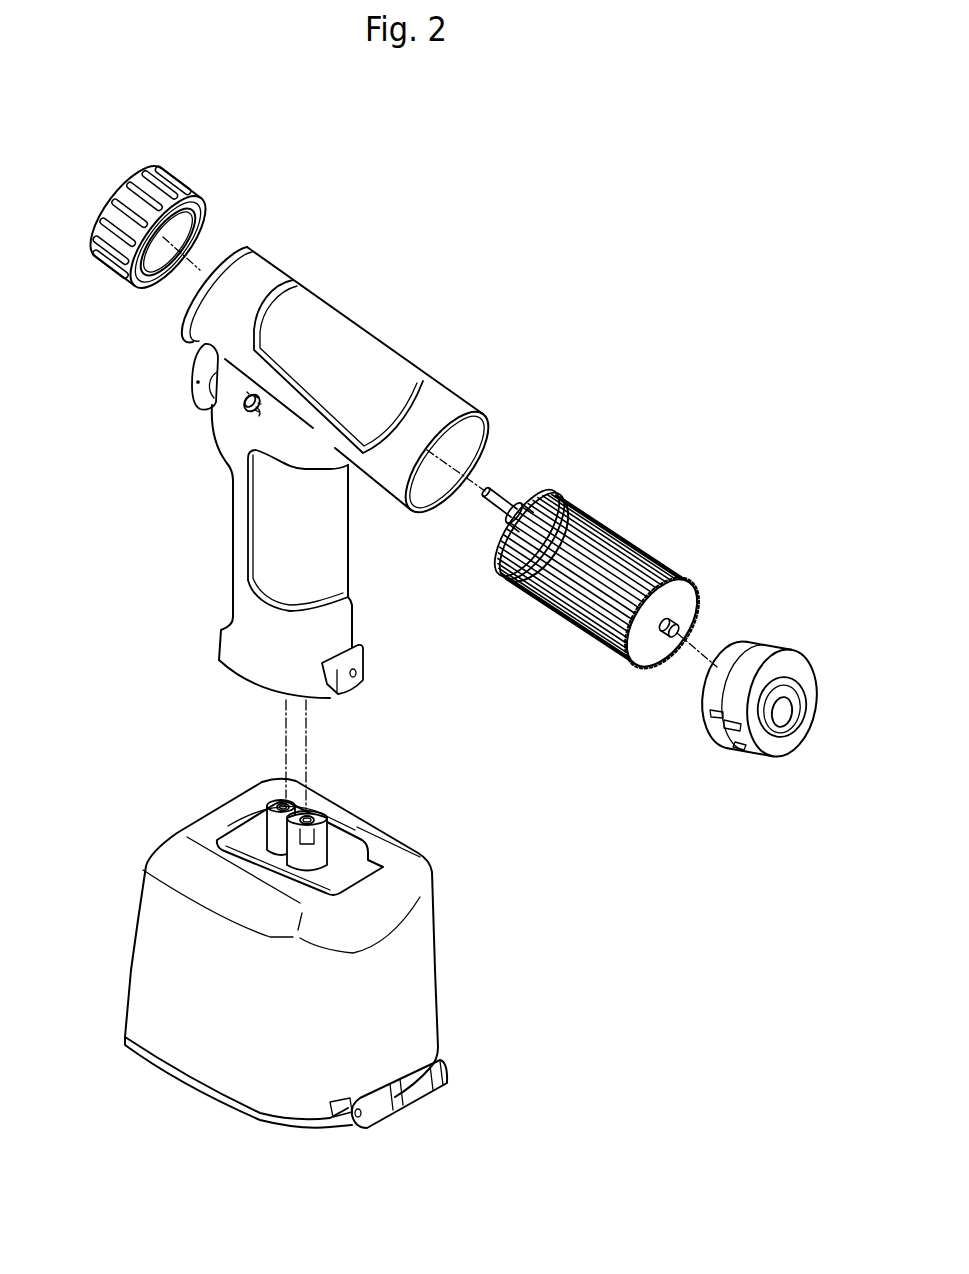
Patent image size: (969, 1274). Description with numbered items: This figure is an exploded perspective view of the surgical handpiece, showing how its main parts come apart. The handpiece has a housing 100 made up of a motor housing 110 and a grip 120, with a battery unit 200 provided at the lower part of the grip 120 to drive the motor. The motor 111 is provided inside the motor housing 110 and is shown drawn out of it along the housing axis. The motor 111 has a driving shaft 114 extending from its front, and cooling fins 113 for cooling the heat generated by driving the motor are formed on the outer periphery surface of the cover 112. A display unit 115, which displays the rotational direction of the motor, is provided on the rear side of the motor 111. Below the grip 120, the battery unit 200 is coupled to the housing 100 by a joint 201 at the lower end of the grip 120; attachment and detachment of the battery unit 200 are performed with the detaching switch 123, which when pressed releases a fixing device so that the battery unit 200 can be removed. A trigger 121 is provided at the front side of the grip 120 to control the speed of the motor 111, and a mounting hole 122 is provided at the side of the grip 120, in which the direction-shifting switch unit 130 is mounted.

The housing 100 is at (573, 353).
The motor housing 110 is at (302, 258).
The motor 111 is at (560, 497).
The cover 112 is at (648, 525).
The cooling fins 113 is at (590, 497).
The driving shaft 114 is at (493, 487).
The display unit 115 is at (787, 668).
The grip 120 is at (215, 530).
The trigger 121 is at (207, 365).
The mounting hole 122 is at (260, 413).
The detaching switch 123 is at (363, 668).
The direction-shifting switch unit 130 is at (228, 398).
The battery unit 200 is at (140, 830).
The joint 201 is at (272, 806).